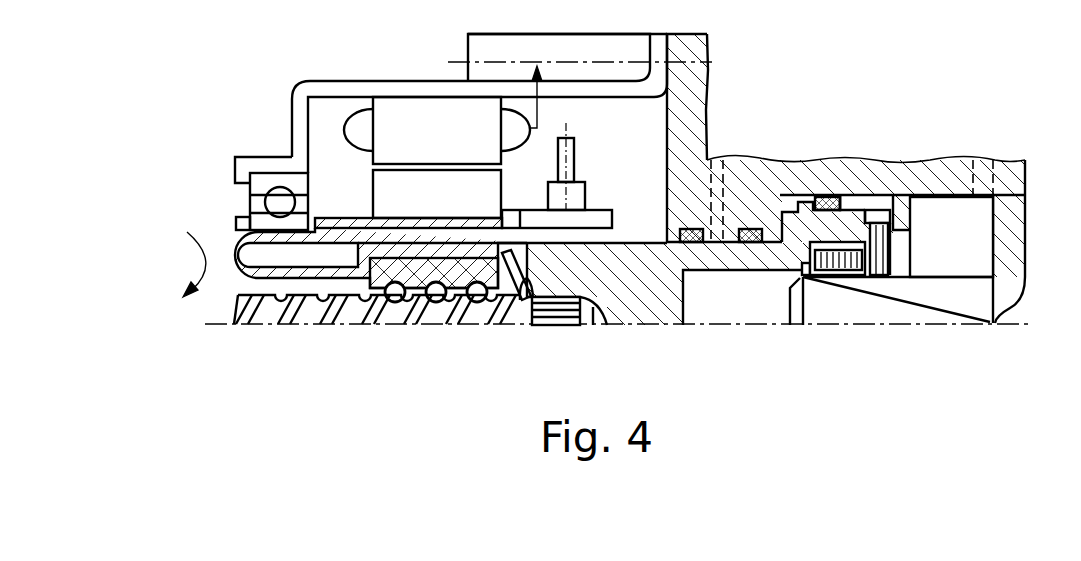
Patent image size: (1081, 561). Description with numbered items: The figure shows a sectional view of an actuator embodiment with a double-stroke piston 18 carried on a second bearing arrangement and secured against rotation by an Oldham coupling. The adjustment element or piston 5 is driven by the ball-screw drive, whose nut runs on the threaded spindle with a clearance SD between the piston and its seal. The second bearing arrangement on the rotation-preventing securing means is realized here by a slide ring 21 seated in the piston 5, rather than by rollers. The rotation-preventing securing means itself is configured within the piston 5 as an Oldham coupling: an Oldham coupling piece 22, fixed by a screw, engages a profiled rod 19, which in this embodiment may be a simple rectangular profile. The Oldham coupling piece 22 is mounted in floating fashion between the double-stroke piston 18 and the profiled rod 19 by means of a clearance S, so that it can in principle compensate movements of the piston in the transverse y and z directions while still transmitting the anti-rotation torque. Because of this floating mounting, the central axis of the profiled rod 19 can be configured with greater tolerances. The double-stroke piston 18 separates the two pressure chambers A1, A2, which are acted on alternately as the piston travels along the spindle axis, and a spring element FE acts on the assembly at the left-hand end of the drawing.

The adjustment element/piston 5 is at (773, 260).
The double-stroke piston 18 is at (806, 196).
The slide ring 21 is at (845, 212).
The Oldham coupling piece 22 is at (887, 257).
The profiled rod 19 is at (877, 307).
The clearance of piston with respect to seal SD is at (720, 243).
The clearance S is at (880, 212).
The pressure chamber A1 is at (953, 257).
The pressure chamber A2 is at (782, 195).
The spring element FE is at (237, 248).